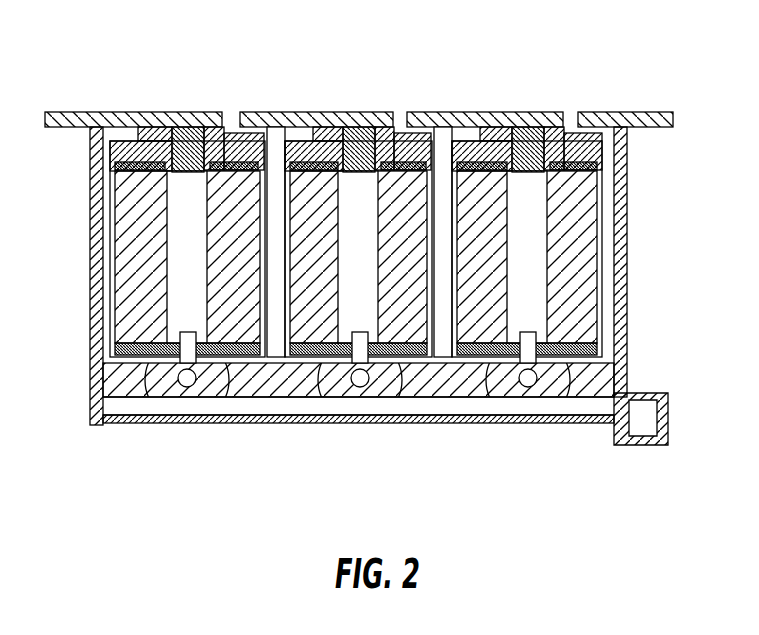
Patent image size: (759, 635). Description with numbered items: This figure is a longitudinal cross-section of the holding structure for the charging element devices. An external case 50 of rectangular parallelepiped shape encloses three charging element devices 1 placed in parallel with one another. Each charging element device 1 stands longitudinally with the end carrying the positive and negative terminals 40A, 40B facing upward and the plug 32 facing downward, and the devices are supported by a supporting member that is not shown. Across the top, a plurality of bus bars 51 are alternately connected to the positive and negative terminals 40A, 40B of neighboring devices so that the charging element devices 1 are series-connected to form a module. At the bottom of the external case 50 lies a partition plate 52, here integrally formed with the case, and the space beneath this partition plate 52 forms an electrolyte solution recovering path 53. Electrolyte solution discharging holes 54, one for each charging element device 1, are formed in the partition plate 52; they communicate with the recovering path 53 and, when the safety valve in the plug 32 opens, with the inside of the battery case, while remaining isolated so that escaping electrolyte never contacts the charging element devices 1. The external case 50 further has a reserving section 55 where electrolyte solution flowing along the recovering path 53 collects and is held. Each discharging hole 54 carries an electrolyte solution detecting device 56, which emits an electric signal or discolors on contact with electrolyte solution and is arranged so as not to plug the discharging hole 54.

The charging element device 1 is at (100, 268).
The plug 32 is at (180, 352).
The positive terminal 40A is at (195, 126).
The negative terminal 40B is at (252, 138).
The external case 50 is at (90, 233).
The bus bar 51 is at (98, 112).
The partition plate 52 is at (247, 398).
The electrolyte solution recovering path 53 is at (453, 401).
The electrolyte solution discharging hole 54 is at (180, 367).
The reserving section 55 is at (645, 418).
The electrolyte solution detecting device 56 is at (187, 390).